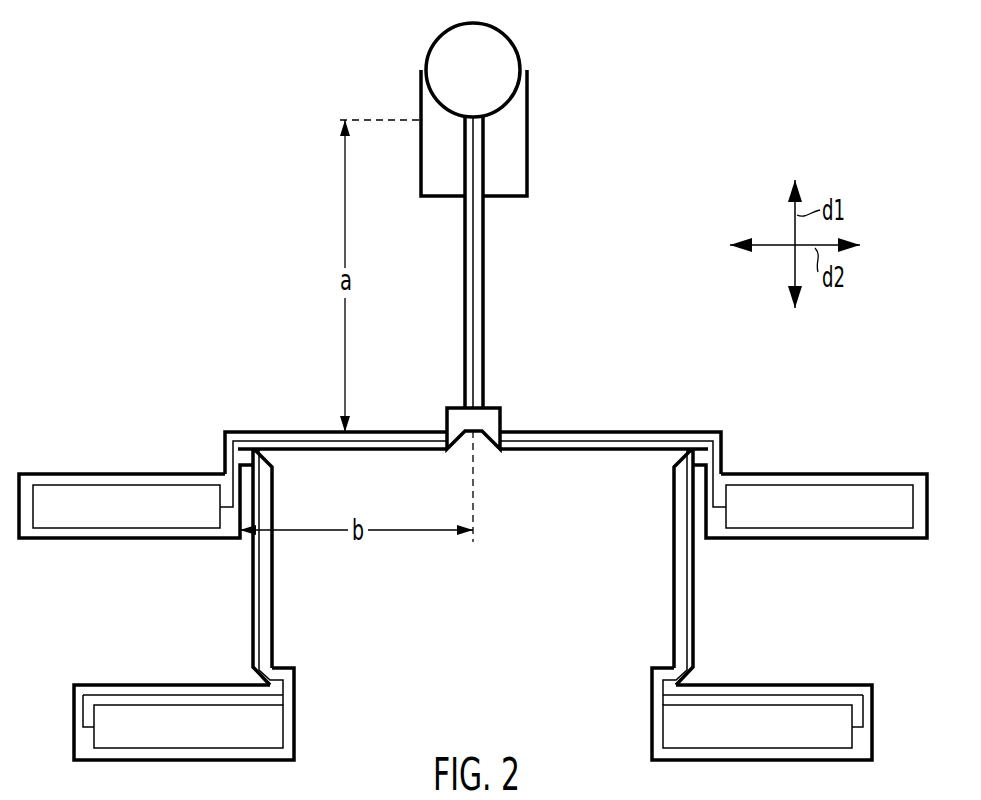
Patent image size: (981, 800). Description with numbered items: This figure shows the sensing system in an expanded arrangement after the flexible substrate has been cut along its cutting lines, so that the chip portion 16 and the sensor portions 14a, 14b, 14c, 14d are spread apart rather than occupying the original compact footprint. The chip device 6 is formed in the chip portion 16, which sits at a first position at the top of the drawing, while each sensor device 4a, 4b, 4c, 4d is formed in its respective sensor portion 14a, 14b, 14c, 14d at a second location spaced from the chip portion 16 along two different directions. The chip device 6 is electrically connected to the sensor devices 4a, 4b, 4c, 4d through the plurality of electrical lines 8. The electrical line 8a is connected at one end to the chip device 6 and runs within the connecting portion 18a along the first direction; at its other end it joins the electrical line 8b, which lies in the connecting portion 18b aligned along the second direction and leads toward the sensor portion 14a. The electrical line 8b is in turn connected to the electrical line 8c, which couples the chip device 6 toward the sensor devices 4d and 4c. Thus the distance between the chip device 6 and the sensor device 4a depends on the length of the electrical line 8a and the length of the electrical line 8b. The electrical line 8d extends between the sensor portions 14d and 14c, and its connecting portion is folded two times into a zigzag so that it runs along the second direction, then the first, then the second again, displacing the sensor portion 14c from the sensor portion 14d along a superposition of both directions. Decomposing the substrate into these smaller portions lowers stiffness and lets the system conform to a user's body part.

The chip device 6 is at (480, 87).
The chip portion 16 is at (518, 170).
The connecting portion 18a is at (485, 280).
The electrical line 8a is at (474, 318).
The connecting portion 18b is at (263, 431).
The electrical line 8b is at (388, 441).
The electrical line 8c is at (556, 441).
The electrical lines 8 is at (366, 464).
The electrical line 8d is at (675, 547).
The sensor portion 14a is at (65, 474).
The sensor portion 14b is at (120, 685).
The sensor portion 14c is at (824, 685).
The sensor portion 14d is at (878, 474).
The sensor device 4a is at (138, 522).
The sensor device 4b is at (202, 742).
The sensor device 4c is at (772, 742).
The sensor device 4d is at (833, 522).